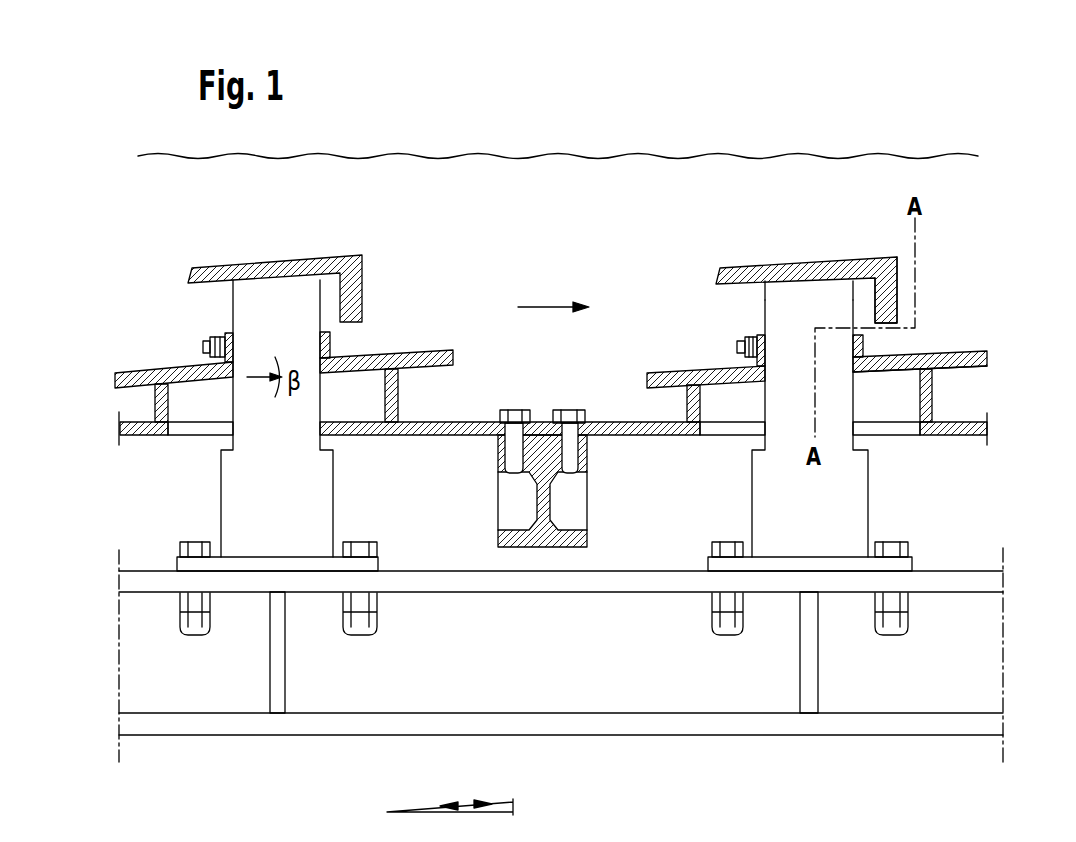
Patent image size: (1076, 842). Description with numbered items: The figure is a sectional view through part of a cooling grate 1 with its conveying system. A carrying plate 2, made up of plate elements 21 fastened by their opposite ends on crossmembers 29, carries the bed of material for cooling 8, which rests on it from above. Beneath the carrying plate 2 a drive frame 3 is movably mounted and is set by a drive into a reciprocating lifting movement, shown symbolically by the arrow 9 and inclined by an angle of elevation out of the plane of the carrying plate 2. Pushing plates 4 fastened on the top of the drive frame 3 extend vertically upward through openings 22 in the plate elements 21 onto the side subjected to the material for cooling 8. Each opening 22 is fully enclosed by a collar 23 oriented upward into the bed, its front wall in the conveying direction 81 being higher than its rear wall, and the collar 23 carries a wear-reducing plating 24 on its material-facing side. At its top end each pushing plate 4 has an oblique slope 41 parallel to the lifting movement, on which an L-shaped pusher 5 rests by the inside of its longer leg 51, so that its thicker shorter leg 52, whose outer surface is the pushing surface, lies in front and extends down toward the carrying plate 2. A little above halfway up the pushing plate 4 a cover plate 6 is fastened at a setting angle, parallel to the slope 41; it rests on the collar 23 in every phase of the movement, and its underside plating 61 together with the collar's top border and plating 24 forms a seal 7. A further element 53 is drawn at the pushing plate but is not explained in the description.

The cooling grate 1 is at (159, 352).
The carrying plate 2 is at (553, 459).
The drive frame 3 is at (716, 683).
The pushing plate 4 is at (820, 380).
The pusher 5 is at (850, 251).
The cover plate 6 is at (430, 350).
The seal 7 is at (686, 372).
The material for cooling 8 is at (447, 206).
The arrow of lifting movement 9 is at (462, 803).
The plate element 21 is at (643, 436).
The opening 22 is at (722, 436).
The collar 23 is at (687, 410).
The plating 24 is at (935, 400).
The crossmember 29 is at (498, 542).
The oblique slope 41 is at (775, 265).
The longer leg 51 is at (812, 262).
The shorter leg 52 is at (898, 300).
The fixing screw 53 is at (757, 337).
The plating 61 is at (965, 371).
The conveying direction 81 is at (538, 305).